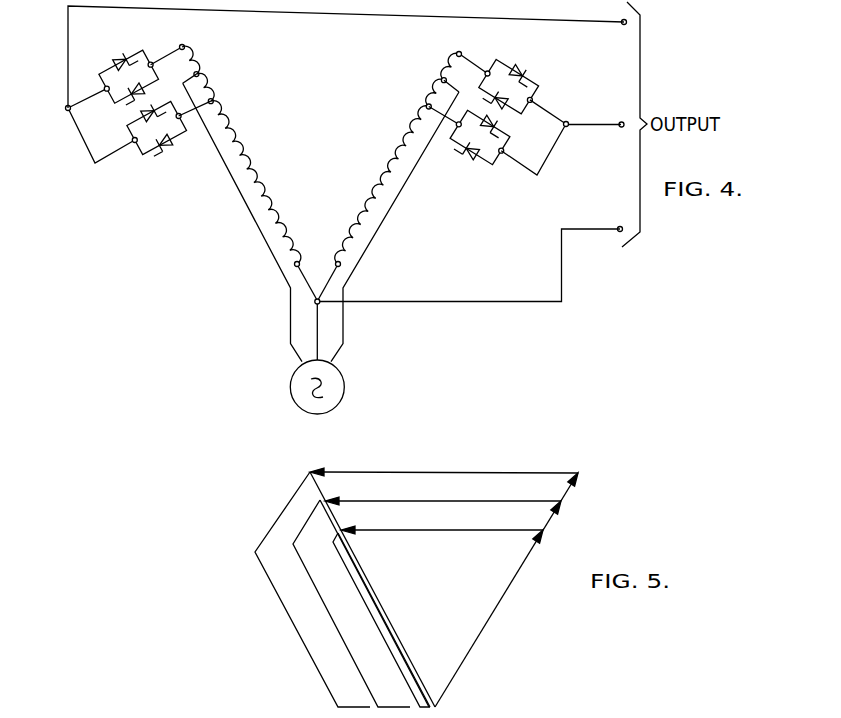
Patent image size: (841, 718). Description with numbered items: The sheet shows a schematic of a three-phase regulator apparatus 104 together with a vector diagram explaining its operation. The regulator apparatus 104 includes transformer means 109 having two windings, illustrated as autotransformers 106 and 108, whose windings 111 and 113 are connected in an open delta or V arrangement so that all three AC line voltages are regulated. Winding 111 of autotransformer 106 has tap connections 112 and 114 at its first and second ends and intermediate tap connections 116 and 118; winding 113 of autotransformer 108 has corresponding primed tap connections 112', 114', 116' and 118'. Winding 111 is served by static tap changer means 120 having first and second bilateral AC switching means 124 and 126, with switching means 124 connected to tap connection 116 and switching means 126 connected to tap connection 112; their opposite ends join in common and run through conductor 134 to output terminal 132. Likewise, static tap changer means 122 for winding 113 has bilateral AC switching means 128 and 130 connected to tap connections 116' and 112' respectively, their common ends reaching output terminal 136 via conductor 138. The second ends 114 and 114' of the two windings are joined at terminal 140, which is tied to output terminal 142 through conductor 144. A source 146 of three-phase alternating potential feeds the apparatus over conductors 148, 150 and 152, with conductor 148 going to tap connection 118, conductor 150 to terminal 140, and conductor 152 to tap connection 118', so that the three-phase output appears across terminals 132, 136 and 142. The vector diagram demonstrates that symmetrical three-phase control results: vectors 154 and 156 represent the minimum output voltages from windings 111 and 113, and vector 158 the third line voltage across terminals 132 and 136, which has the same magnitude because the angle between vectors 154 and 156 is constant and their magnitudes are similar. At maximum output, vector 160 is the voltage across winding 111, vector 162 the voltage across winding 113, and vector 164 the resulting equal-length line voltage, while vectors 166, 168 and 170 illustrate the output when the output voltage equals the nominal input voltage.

In FIG. 4, the regulator apparatus 104 is at (232, 255).
In FIG. 4, the autotransformer 106 is at (303, 195).
In FIG. 4, the autotransformer 108 is at (368, 190).
In FIG. 4, the transformer means 109 is at (332, 160).
In FIG. 4, the winding 111 is at (236, 129).
In FIG. 4, the tap connection 112 is at (162, 43).
In FIG. 4, the tap connection 112' is at (476, 53).
In FIG. 4, the winding 113 is at (412, 128).
In FIG. 4, the terminal 114 is at (304, 258).
In FIG. 4, the terminal 114' is at (330, 258).
In FIG. 4, the tap connection 116 is at (209, 93).
In FIG. 4, the tap connection 116' is at (427, 98).
In FIG. 4, the tap connection 118 is at (206, 63).
In FIG. 4, the tap connection 118' is at (433, 69).
In FIG. 4, the static tap changer means 120 is at (120, 130).
In FIG. 4, the static tap changer means 122 is at (545, 138).
In FIG. 4, the bilateral AC switching means 124 is at (141, 157).
In FIG. 4, the bilateral AC switching means 126 is at (142, 50).
In FIG. 4, the bilateral AC switching means 128 is at (521, 188).
In FIG. 4, the bilateral AC switching means 130 is at (548, 55).
In FIG. 4, the output terminal 132 is at (625, 25).
In FIG. 4, the conductor 134 is at (368, 15).
In FIG. 4, the output terminal 136 is at (621, 127).
In FIG. 4, the conductor 138 is at (607, 118).
In FIG. 4, the terminal 140 is at (318, 298).
In FIG. 4, the output terminal 142 is at (620, 226).
In FIG. 4, the conductor 144 is at (493, 301).
In FIG. 4, the source 146 is at (297, 372).
In FIG. 4, the conductor 148 is at (290, 316).
In FIG. 4, the conductor 150 is at (315, 330).
In FIG. 4, the conductor 152 is at (343, 318).
In FIG. 5, the vector 154 is at (375, 622).
In FIG. 5, the vector 156 is at (540, 538).
In FIG. 5, the vector 158 is at (468, 533).
In FIG. 5, the vector 160 is at (291, 623).
In FIG. 5, the vector 162 is at (571, 481).
In FIG. 5, the vector 164 is at (470, 477).
In FIG. 5, the vector 166 is at (334, 622).
In FIG. 5, the vector 168 is at (556, 507).
In FIG. 5, the vector 170 is at (470, 505).